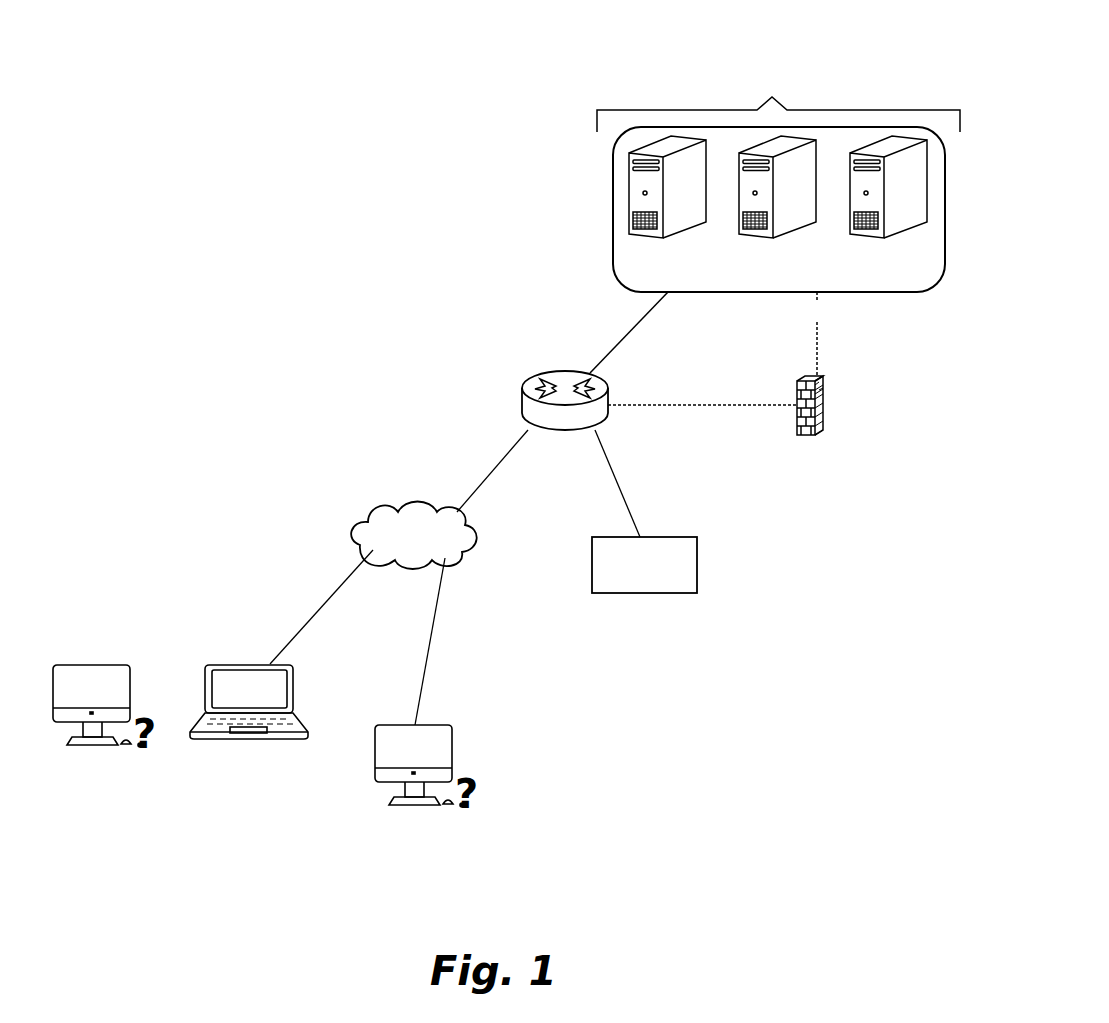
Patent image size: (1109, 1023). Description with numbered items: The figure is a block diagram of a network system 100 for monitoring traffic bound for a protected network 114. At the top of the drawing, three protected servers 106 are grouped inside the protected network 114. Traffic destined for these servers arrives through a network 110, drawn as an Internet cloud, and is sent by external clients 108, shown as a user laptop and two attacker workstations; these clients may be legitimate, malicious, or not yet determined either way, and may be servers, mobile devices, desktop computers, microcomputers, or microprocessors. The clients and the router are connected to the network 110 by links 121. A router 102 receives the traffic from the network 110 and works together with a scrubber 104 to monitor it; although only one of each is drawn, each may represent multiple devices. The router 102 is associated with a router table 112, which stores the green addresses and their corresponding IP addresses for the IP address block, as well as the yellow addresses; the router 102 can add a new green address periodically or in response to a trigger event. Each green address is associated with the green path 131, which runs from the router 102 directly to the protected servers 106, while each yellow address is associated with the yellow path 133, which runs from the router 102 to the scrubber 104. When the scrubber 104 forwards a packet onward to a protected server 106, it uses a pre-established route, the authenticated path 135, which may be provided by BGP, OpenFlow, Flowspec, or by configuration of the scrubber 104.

The network system 100 is at (208, 159).
The router 102 is at (521, 394).
The scrubber 104 is at (824, 398).
The protected servers 106 is at (802, 215).
The external clients 108 is at (107, 665).
The network 110 is at (376, 503).
The router table 112 is at (697, 566).
The protected network 114 is at (776, 101).
The network link 121 is at (482, 483).
The green path 131 is at (605, 357).
The yellow path 133 is at (717, 407).
The authenticated path 135 is at (815, 342).